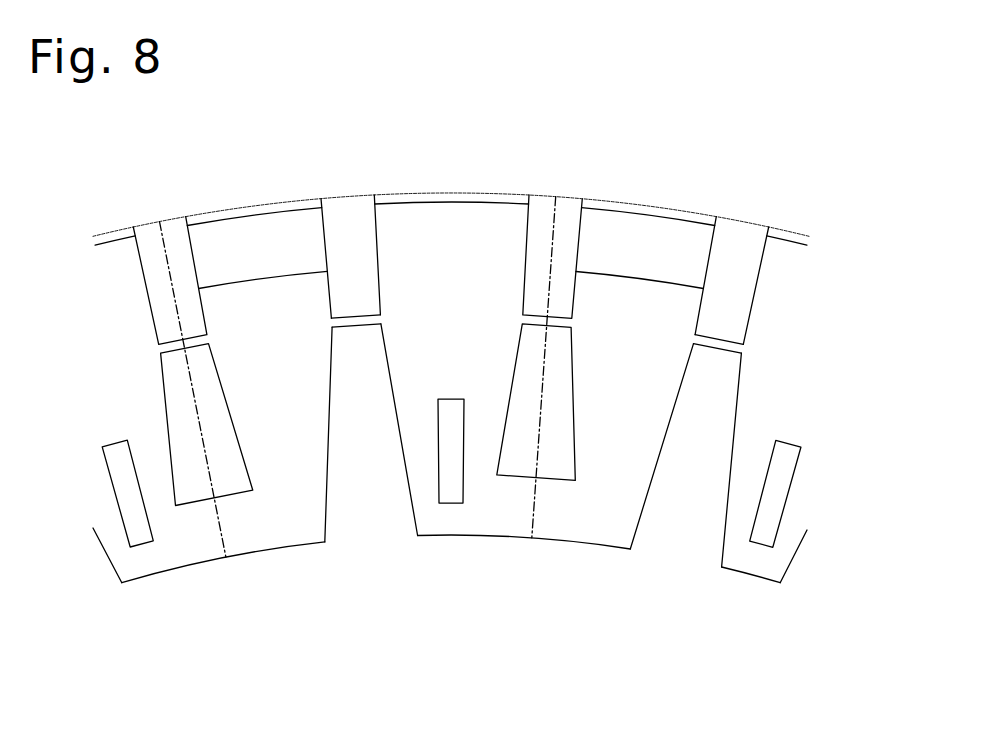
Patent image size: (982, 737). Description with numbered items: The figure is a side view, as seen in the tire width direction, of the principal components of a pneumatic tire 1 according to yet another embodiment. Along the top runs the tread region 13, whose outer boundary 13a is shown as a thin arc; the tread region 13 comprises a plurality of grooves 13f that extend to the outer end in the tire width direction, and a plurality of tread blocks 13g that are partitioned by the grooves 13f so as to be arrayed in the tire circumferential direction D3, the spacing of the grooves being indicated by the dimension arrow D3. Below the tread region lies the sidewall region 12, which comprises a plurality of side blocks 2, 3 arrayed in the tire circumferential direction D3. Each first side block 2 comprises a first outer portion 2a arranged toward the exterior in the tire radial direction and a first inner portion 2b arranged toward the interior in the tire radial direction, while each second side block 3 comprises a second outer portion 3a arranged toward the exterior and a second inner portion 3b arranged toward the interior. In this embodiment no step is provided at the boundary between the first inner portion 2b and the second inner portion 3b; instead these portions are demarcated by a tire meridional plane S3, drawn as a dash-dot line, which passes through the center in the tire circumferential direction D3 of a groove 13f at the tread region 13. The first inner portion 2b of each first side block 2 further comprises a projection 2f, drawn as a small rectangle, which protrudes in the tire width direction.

The rotating electric machine 1 is at (802, 122).
The sidewall region 12 is at (800, 388).
The tread region 13 is at (593, 160).
The outer peripheral surface 13a is at (787, 233).
The groove 13f is at (150, 228).
The tread block 13g is at (250, 213).
The first side block 2 is at (449, 422).
The first outer portion 2a is at (373, 270).
The first inner portion 2b is at (413, 495).
The projection 2f is at (437, 448).
The second side block 3 is at (444, 424).
The second outer portion 3a is at (703, 307).
The second inner portion 3b is at (640, 517).
The tire meridional plane S3 is at (247, 555).
The tire circumferential direction D3 is at (578, 67).